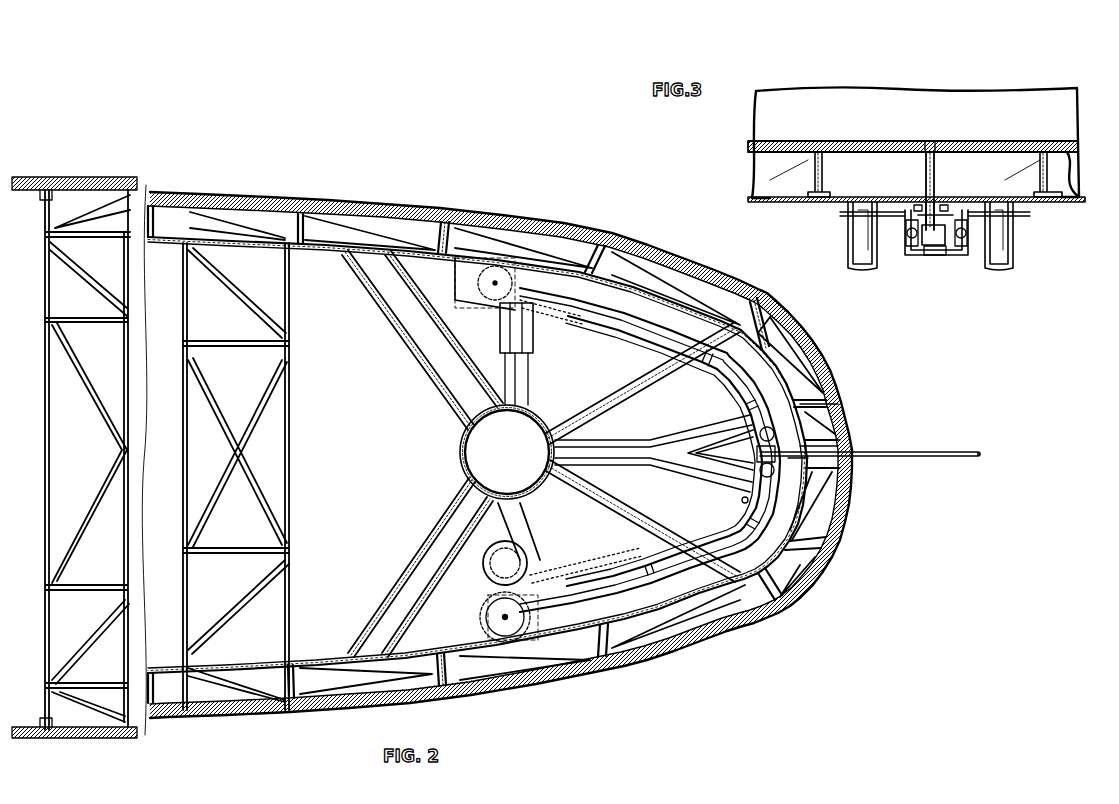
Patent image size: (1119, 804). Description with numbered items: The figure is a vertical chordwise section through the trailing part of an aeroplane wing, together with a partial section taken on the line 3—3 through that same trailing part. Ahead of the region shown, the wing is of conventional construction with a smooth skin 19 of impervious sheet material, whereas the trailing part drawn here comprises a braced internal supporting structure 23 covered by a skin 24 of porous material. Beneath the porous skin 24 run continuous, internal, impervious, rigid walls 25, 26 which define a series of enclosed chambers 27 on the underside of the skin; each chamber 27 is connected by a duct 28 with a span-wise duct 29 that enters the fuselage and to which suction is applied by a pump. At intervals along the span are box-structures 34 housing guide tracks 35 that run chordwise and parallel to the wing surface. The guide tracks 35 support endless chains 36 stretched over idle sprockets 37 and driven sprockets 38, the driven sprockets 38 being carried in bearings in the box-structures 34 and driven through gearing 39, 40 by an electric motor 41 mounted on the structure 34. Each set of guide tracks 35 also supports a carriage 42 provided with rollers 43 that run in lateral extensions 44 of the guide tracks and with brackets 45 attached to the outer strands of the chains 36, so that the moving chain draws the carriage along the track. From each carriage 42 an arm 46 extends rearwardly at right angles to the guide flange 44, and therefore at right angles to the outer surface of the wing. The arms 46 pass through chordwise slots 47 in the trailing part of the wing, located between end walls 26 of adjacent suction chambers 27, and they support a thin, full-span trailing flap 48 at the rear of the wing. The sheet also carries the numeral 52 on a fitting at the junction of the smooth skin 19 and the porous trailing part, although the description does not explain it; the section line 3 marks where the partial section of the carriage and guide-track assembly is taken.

In FIG. 2, the section line 3— 3 is at (880, 402).
In FIG. 2, the smooth skin 19 is at (40, 180).
In FIG. 2, the braced internal supporting structure 23 is at (550, 268).
In FIG. 2, the skin of porous material 24 is at (375, 196).
In FIG. 3, the skin of porous material 24 is at (812, 144).
In FIG. 2, the internal impervious rigid wall 25 is at (168, 222).
In FIG. 3, the end wall 26 is at (925, 180).
In FIG. 2, the enclosed chamber 27 is at (85, 205).
In FIG. 3, the enclosed chamber 27 is at (804, 180).
In FIG. 2, the duct 28 is at (470, 432).
In FIG. 3, the duct 28 is at (860, 258).
In FIG. 2, the span-wise duct 29 is at (495, 445).
In FIG. 2, the box-structure 34 is at (600, 575).
In FIG. 2, the guide track 35 is at (555, 300).
In FIG. 3, the guide track 35 is at (968, 222).
In FIG. 2, the endless chain 36 is at (742, 500).
In FIG. 3, the endless chain 36 is at (908, 210).
In FIG. 2, the idle sprocket 37 is at (560, 240).
In FIG. 2, the driven sprocket 38 is at (500, 618).
In FIG. 2, the gearing 39 is at (486, 607).
In FIG. 2, the gearing 40 is at (478, 600).
In FIG. 2, the electric motor 41 is at (520, 556).
In FIG. 2, the carriage 42 is at (760, 455).
In FIG. 3, the carriage 42 is at (936, 257).
In FIG. 2, the roller 43 is at (760, 436).
In FIG. 3, the lateral extension of the guide-track 44 is at (875, 255).
In FIG. 2, the bracket 45 is at (820, 470).
In FIG. 3, the bracket 45 is at (880, 214).
In FIG. 2, the arm 46 is at (812, 446).
In FIG. 3, the arm 46 is at (934, 160).
In FIG. 3, the chordwise slot 47 is at (928, 142).
In FIG. 2, the trailing flap 48 is at (978, 458).
In FIG. 3, the trailing flap 48 is at (778, 112).
In FIG. 2, the fitting 52 is at (46, 190).